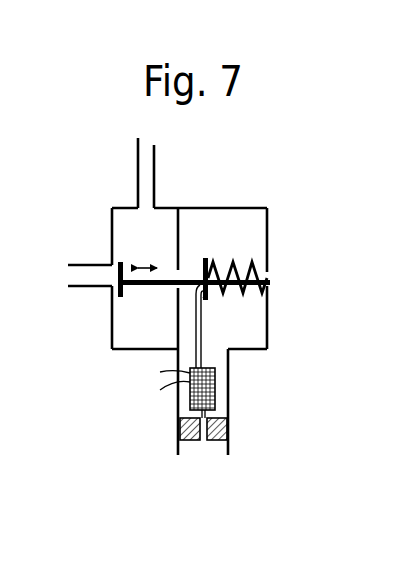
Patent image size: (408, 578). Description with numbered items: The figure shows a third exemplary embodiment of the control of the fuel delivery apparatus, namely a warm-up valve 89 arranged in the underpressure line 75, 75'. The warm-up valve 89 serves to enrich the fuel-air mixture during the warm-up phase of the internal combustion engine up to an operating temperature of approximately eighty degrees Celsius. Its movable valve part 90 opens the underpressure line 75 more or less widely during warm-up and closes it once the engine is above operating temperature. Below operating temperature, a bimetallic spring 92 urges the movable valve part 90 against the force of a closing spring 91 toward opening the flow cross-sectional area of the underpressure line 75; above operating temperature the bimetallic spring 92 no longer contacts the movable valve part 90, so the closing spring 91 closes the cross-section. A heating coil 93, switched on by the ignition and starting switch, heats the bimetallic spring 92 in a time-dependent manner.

The underpressure line 75 is at (81, 295).
The underpressure line 75' is at (181, 169).
The warm-up valve 89 is at (98, 238).
The movable valve part 90 is at (160, 278).
The closing spring 91 is at (238, 264).
The bimetallic spring 92 is at (203, 323).
The heating coil 93 is at (215, 382).